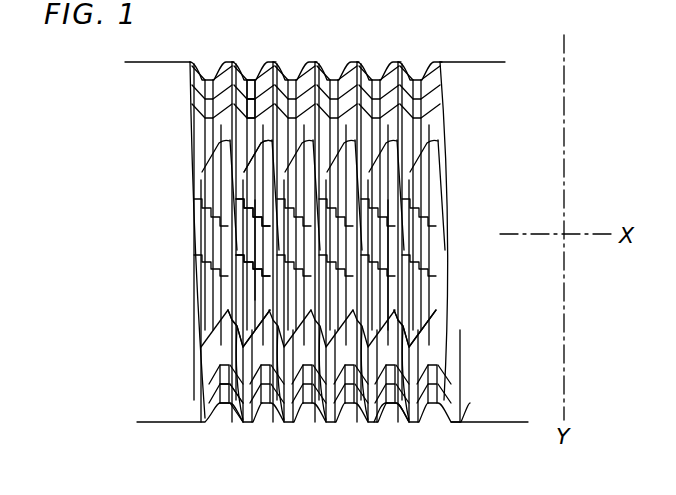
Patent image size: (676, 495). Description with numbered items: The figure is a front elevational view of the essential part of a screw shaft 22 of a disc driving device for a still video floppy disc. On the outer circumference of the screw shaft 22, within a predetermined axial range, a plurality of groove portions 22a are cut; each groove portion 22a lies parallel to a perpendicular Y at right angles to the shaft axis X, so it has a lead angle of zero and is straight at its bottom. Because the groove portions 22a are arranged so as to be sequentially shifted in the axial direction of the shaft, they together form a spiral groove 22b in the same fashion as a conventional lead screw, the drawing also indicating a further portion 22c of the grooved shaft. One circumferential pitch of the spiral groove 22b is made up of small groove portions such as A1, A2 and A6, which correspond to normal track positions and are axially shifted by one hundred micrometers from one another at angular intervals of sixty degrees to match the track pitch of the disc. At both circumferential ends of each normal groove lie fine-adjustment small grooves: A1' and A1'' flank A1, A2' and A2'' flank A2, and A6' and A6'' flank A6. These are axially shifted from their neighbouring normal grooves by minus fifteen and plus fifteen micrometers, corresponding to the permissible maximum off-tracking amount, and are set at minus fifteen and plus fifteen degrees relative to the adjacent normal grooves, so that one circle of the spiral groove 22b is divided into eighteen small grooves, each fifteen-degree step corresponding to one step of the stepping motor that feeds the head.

The screw shaft 22 is at (474, 61).
The groove portions 22a is at (397, 408).
The spiral groove 22b is at (393, 291).
The lower jagged layer portion 22c is at (428, 350).
The small groove portion A2'' is at (195, 91).
The small groove portion A2 is at (195, 125).
The small groove portion A2' is at (203, 162).
The small groove portion A1'' is at (202, 210).
The small groove portion A1 is at (196, 250).
The small groove portion A1' is at (202, 275).
The small groove portion A6'' is at (202, 324).
The small groove portion A6 is at (189, 373).
The small groove portion A6' is at (189, 397).